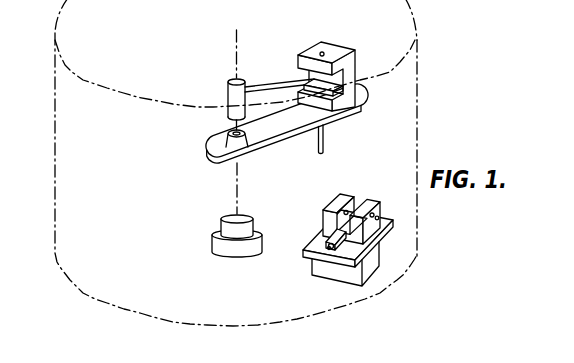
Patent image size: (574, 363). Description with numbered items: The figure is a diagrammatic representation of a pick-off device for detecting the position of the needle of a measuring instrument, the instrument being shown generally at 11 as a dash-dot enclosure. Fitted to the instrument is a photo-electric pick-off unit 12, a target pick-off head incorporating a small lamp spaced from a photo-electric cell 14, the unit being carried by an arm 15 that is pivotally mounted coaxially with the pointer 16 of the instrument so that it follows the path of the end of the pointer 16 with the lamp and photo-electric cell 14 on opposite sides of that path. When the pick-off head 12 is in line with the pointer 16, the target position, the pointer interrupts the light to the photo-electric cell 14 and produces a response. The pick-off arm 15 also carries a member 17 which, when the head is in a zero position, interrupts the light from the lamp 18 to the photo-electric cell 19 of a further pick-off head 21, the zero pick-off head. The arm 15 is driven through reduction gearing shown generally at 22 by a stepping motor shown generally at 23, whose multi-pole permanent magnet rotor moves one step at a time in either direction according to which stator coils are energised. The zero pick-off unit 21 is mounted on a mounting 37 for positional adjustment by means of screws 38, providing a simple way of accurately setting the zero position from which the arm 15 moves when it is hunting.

The instrument 11 is at (418, 140).
The photo-electric pick-off unit 12 is at (324, 41).
The photo-electric cell 14 is at (324, 53).
The arm 15 is at (282, 122).
The pointer 16 is at (278, 83).
The member 17 is at (323, 135).
The lamp 18 is at (374, 213).
The photo-electric cell 19 is at (350, 210).
The zero pick-off head 21 is at (378, 219).
The reduction gearing 22 is at (230, 243).
The stepping motor 23 is at (262, 237).
The mounting 37 is at (383, 244).
The screws 38 is at (328, 246).